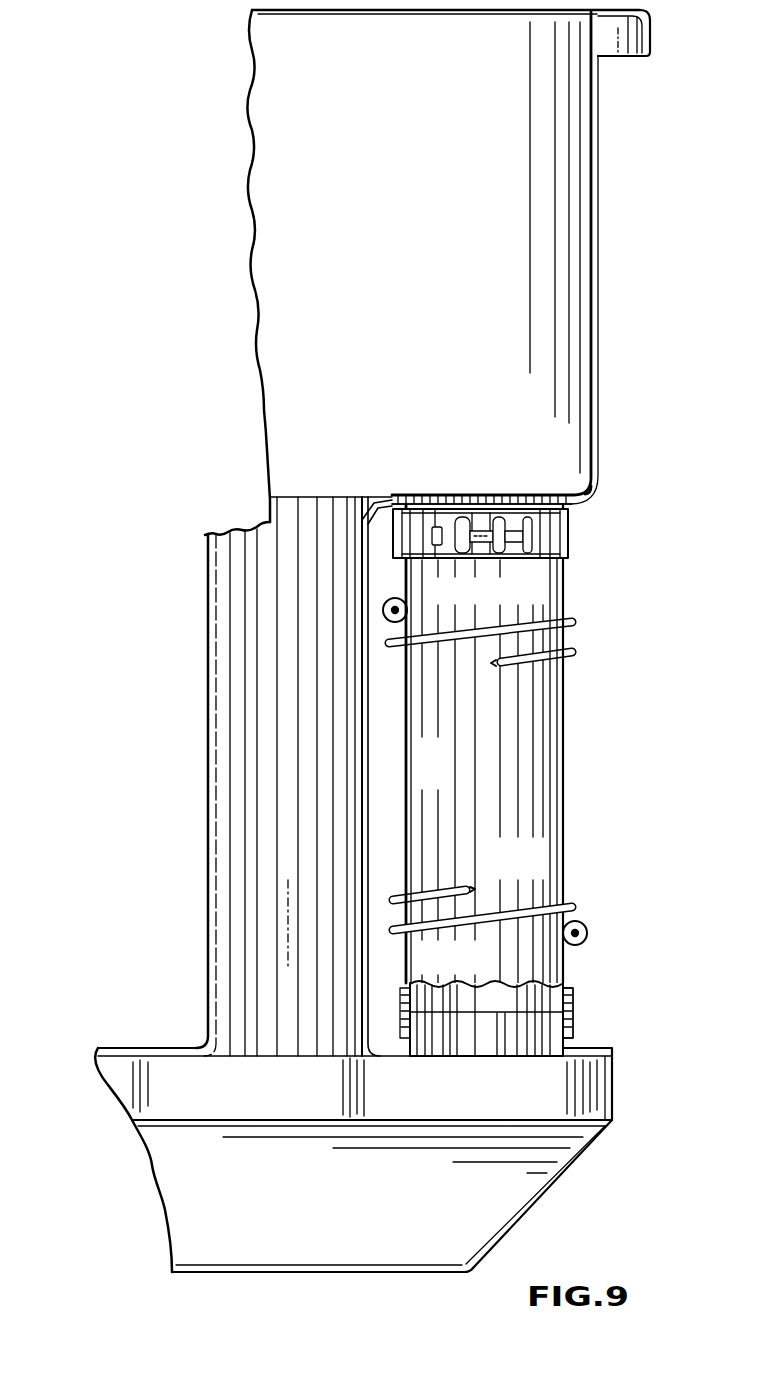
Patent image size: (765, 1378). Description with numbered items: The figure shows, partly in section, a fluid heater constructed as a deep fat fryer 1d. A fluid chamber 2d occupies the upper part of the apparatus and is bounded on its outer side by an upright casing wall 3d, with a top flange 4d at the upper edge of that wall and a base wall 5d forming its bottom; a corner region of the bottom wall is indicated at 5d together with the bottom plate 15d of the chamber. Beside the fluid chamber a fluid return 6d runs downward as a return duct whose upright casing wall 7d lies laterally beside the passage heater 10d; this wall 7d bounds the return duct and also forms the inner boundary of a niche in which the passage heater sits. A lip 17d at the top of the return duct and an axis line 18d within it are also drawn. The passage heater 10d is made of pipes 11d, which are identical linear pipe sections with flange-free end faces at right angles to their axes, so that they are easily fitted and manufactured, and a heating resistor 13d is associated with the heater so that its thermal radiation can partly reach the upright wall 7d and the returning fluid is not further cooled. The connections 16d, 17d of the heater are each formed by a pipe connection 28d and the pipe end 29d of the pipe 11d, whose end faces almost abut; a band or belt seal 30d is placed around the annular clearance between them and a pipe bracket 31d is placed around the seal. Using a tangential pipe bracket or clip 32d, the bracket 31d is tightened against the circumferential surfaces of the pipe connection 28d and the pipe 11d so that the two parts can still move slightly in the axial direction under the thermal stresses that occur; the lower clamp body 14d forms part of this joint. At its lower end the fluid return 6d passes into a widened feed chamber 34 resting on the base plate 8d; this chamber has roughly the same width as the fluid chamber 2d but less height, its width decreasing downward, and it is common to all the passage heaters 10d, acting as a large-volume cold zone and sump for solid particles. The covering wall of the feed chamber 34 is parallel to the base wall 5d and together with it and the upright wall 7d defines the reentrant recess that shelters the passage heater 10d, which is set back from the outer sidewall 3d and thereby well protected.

The deep fat fryer 1d is at (65, 965).
The fluid chamber 2d is at (583, 297).
The casing wall 3d is at (599, 199).
The housing top flange 4d is at (618, 56).
The base wall 5d is at (560, 498).
The fluid return 6d is at (219, 742).
The upright casing wall 7d is at (368, 762).
The base plate 8d is at (415, 1262).
The passage heater 10d is at (587, 802).
The pipe 11d is at (551, 713).
The heating resistor 13d is at (520, 904).
The lower clamp body 14d is at (494, 1040).
The housing bottom plate 15d is at (468, 498).
The connection 16d is at (588, 1013).
The connection 17d is at (380, 544).
The sleeve axis line 18d is at (288, 915).
The pipe connection 28d is at (403, 498).
The pipe end 29d is at (430, 978).
The band or belt seal 30d is at (575, 985).
The pipe bracket 31d is at (545, 562).
The tangential pipe bracket or clip 32d is at (481, 558).
The feed chamber 34 is at (515, 1205).